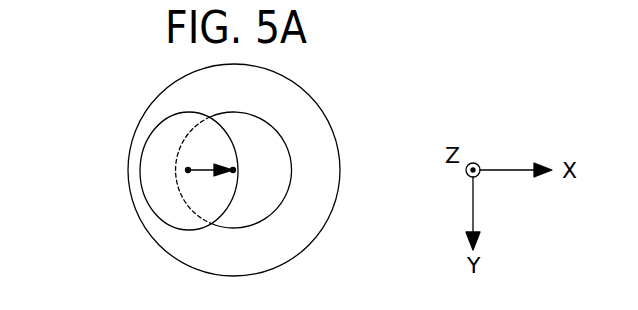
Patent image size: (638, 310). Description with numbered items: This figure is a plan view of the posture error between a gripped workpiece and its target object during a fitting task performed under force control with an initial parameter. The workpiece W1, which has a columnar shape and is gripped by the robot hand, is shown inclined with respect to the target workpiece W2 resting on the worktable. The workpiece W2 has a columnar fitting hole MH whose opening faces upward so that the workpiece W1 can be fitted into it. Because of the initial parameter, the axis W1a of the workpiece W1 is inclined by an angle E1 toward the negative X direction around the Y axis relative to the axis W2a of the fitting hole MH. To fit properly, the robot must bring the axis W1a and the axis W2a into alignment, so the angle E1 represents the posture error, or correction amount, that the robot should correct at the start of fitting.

The workpiece W1 is at (160, 117).
The axis of the workpiece W1a is at (188, 170).
The workpiece W2 is at (317, 104).
The axis of the fitting hole W2a is at (233, 170).
The fitting hole MH is at (175, 186).
The angle E1 is at (210, 186).